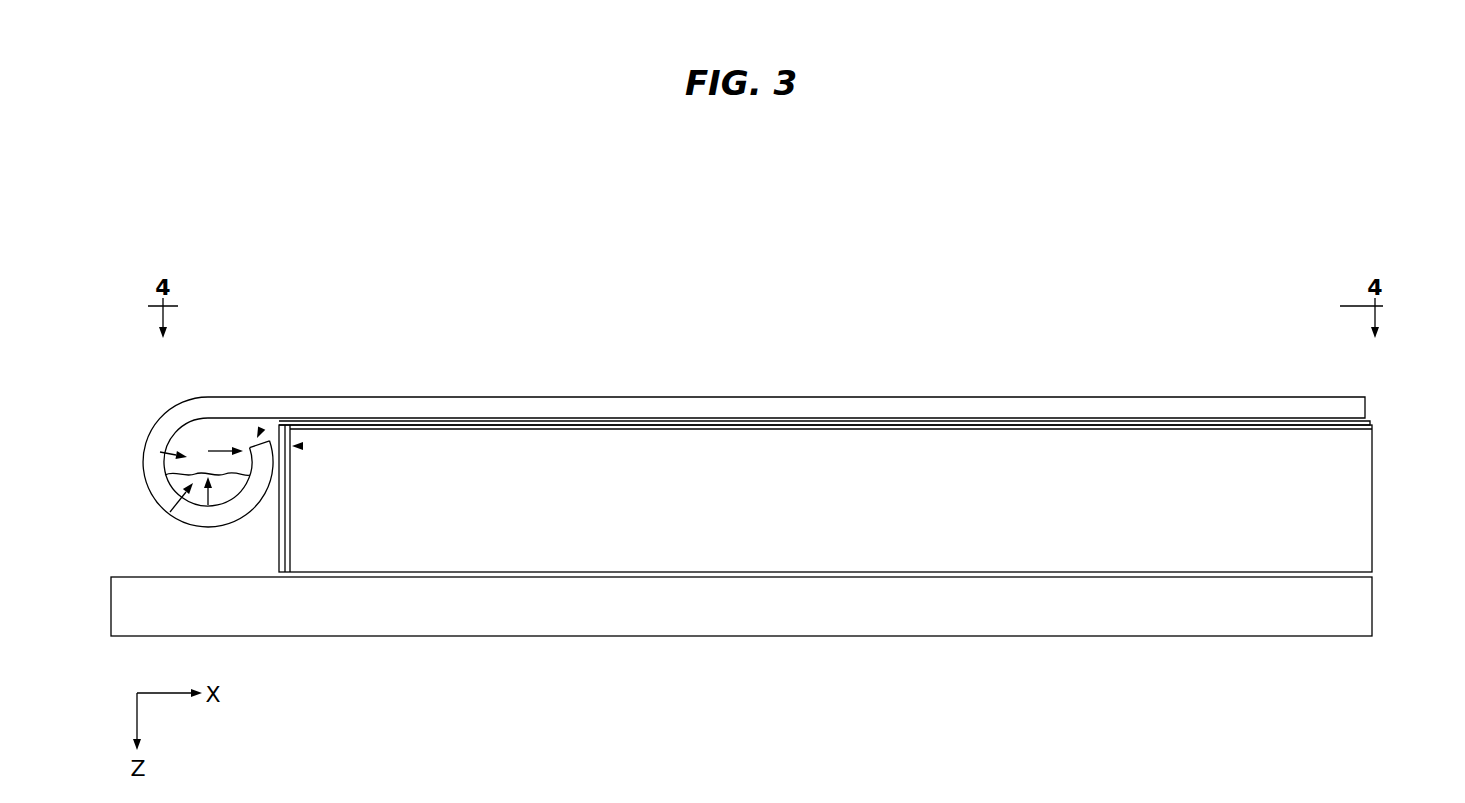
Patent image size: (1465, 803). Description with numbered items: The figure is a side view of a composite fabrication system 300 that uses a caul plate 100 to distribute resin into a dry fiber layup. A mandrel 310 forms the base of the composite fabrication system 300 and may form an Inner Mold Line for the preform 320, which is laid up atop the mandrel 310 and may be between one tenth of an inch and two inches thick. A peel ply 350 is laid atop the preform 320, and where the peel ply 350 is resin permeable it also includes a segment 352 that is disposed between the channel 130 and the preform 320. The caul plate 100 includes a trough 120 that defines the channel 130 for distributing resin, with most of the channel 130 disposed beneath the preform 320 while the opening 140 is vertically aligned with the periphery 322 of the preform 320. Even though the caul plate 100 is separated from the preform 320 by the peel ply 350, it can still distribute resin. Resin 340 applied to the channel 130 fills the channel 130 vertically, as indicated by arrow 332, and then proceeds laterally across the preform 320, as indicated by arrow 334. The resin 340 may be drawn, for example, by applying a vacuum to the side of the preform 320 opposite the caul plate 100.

The composite fabrication system 300 is at (899, 186).
The caul plate 100 is at (683, 397).
The trough 120 is at (158, 418).
The channel 130 is at (162, 452).
The opening 140 is at (262, 428).
The mandrel 310 is at (702, 637).
The preform 320 is at (1362, 485).
The periphery 322 is at (303, 446).
The arrow 332 is at (208, 505).
The arrow 334 is at (227, 451).
The resin 340 is at (171, 511).
The peel ply 350 is at (1377, 414).
The segment 352 is at (278, 537).